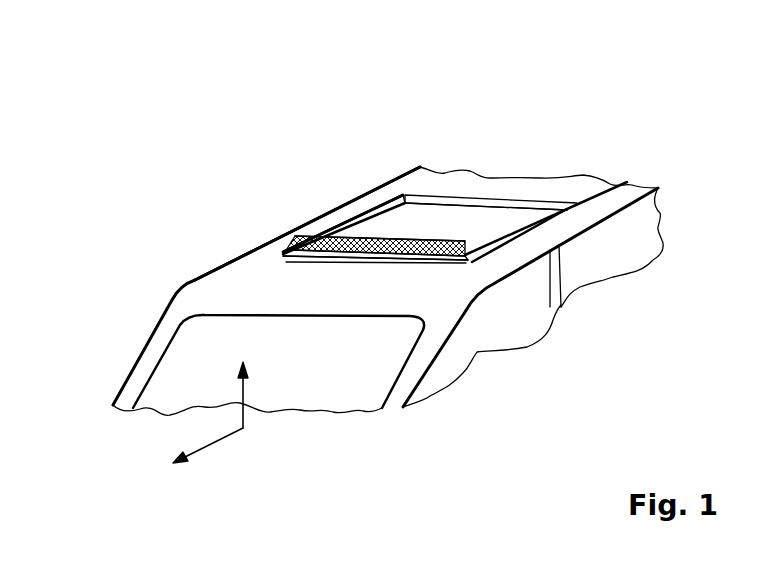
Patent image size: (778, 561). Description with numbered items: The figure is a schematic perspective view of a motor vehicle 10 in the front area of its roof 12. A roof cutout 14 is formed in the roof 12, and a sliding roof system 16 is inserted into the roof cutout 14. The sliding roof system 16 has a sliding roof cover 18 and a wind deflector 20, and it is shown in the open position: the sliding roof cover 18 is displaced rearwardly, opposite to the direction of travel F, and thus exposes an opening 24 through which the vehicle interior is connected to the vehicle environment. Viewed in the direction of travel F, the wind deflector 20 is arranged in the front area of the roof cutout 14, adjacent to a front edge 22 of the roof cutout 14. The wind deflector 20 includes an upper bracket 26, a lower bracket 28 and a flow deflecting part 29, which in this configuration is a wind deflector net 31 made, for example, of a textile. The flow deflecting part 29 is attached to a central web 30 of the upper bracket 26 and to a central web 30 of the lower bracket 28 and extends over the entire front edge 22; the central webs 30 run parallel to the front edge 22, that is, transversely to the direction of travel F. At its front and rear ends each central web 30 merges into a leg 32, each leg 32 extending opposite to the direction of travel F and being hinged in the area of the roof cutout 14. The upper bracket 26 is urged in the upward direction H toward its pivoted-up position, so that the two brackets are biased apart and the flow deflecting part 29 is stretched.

The motor vehicle 10 is at (636, 116).
The roof 12 is at (283, 171).
The roof cutout 14 is at (374, 218).
The sliding roof system 16 is at (452, 127).
The sliding roof cover 18 is at (530, 194).
The wind deflector 20 is at (334, 230).
The front edge 22 is at (383, 252).
The opening 24 is at (400, 218).
The upper bracket 26 is at (605, 281).
The lower bracket 28 is at (330, 256).
The flow deflecting part 29 is at (432, 270).
The central web 30 is at (378, 210).
The wind deflector net 31 is at (315, 253).
The leg 32 is at (332, 232).
The upward direction H is at (240, 390).
The direction of travel F is at (210, 453).